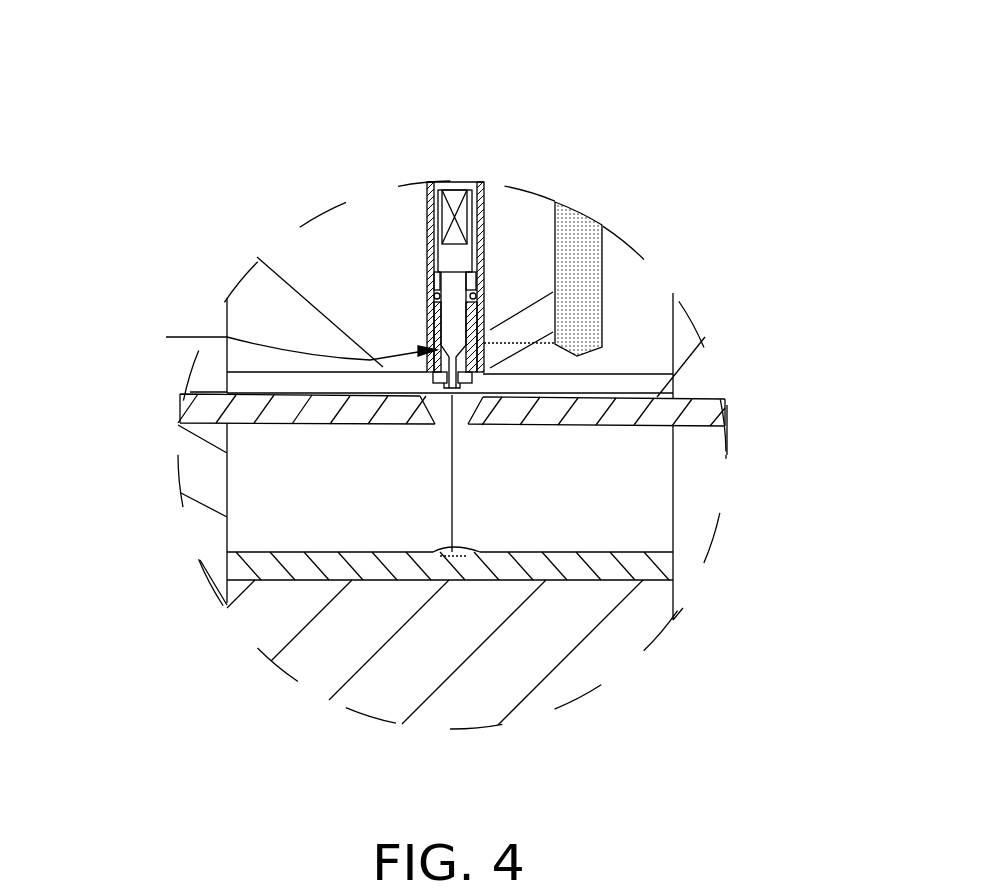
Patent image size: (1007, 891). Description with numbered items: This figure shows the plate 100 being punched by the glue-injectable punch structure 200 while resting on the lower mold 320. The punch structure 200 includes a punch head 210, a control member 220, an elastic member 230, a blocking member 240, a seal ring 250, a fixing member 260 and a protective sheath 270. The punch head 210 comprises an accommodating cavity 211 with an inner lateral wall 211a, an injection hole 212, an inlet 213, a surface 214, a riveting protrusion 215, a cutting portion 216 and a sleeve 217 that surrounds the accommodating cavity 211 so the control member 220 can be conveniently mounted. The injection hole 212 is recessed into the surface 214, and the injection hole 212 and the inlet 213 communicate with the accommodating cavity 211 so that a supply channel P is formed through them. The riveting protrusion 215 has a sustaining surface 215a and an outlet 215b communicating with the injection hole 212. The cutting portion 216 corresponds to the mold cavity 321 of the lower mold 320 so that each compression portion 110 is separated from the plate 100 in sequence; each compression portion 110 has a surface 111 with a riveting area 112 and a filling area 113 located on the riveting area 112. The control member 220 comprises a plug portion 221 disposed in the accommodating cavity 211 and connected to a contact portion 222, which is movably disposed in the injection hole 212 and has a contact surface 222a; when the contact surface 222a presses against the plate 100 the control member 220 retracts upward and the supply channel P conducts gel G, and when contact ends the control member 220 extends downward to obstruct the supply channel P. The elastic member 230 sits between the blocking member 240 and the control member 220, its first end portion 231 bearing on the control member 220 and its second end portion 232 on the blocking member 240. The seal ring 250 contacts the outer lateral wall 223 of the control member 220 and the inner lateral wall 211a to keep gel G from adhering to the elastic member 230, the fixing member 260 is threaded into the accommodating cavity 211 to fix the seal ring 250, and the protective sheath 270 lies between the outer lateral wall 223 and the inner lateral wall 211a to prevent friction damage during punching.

The glue-injectable punch structure 200 is at (242, 88).
The punch head 210 is at (427, 303).
The accommodating cavity 211 is at (427, 266).
The inner lateral wall 211a is at (332, 282).
The injection hole 212 is at (590, 362).
The inlet 213 is at (604, 312).
The surface 214 is at (410, 413).
The riveting protrusion 215 is at (470, 398).
The sustaining surface 215a is at (410, 427).
The outlet 215b is at (410, 410).
The cutting portion 216 is at (227, 372).
The sleeve 217 is at (604, 292).
The control member 220 is at (483, 250).
The plug portion 221 is at (427, 337).
The contact portion 222 is at (462, 398).
The contact surface 222a is at (460, 395).
The outer lateral wall 223 is at (593, 258).
The elastic member 230 is at (431, 192).
The first end portion 231 is at (480, 210).
The second end portion 232 is at (453, 190).
The blocking member 240 is at (467, 190).
The seal ring 250 is at (427, 290).
The fixing member 260 is at (557, 267).
The protective sheath 270 is at (427, 238).
The plate 100 is at (727, 413).
The compression portion 110 is at (627, 426).
The surface 111 is at (655, 398).
The riveting area 112 is at (448, 395).
The filling area 113 is at (457, 395).
The lower mold 320 is at (685, 566).
The mold cavity 321 is at (227, 535).
The gel G is at (613, 252).
The supply channel P is at (292, 338).